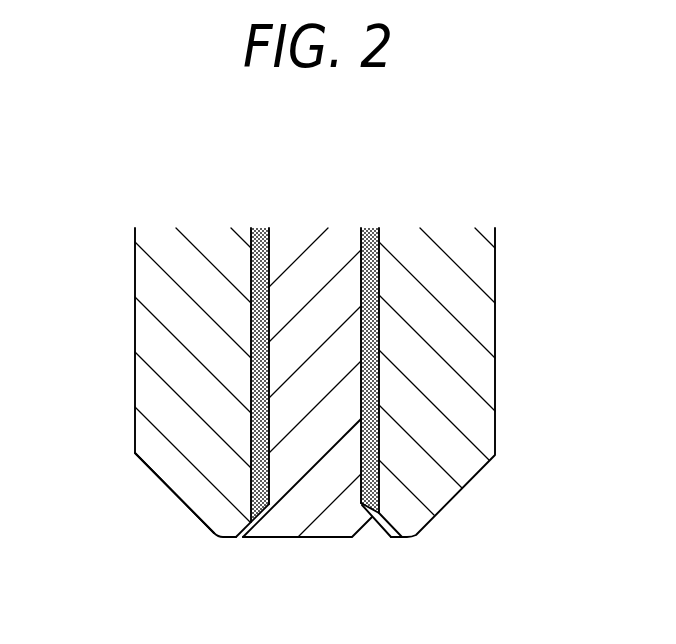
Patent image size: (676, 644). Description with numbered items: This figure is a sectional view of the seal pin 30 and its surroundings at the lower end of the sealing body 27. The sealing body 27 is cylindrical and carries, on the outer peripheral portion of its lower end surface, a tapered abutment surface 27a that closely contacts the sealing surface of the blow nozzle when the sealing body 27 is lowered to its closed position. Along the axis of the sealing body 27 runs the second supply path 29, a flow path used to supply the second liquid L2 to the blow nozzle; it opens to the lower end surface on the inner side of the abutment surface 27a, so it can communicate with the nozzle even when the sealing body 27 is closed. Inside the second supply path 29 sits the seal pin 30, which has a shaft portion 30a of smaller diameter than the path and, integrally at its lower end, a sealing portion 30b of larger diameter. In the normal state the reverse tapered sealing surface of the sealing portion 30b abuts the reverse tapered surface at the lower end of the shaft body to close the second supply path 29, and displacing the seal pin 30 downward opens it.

The sealing body 27 is at (157, 338).
The abutment surface 27a is at (164, 485).
The second supply path 29 is at (372, 343).
The second liquid L2 is at (368, 277).
The seal pin 30 is at (306, 540).
The shaft portion 30a is at (313, 268).
The sealing portion 30b is at (370, 532).